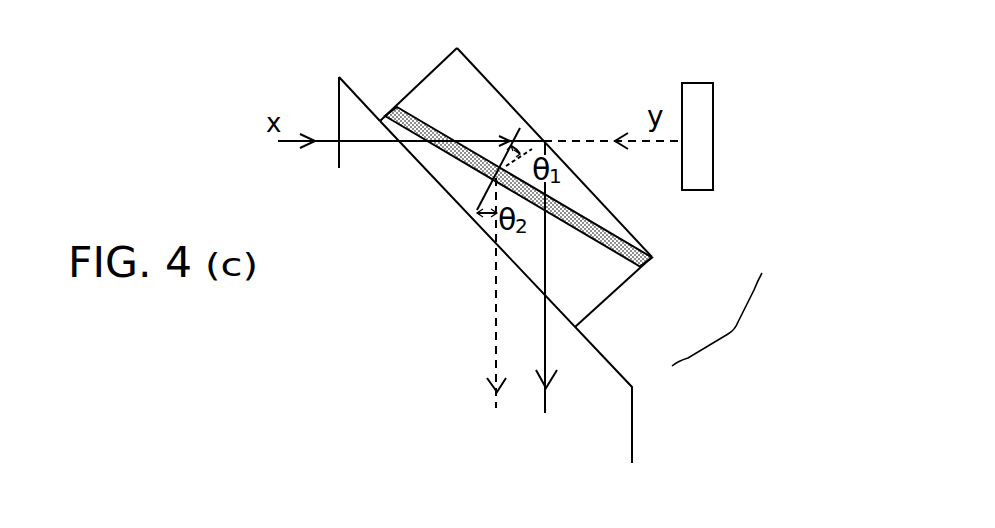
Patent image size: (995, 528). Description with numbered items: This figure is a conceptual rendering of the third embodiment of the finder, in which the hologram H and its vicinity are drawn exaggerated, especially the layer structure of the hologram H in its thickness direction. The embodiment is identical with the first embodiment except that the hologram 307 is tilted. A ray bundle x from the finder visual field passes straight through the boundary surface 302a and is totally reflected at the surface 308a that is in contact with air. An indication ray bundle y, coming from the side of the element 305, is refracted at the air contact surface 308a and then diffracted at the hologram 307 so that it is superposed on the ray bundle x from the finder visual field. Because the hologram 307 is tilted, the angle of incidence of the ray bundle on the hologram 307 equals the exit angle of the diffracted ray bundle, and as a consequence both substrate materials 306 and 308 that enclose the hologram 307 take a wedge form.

The boundary surface 302a is at (427, 168).
The light receiving element 305 is at (715, 128).
The substrate material 306 is at (605, 287).
The hologram 307 is at (640, 268).
The substrate material 308 is at (652, 260).
The air contact surface 308a is at (490, 84).
The hologram H is at (719, 319).